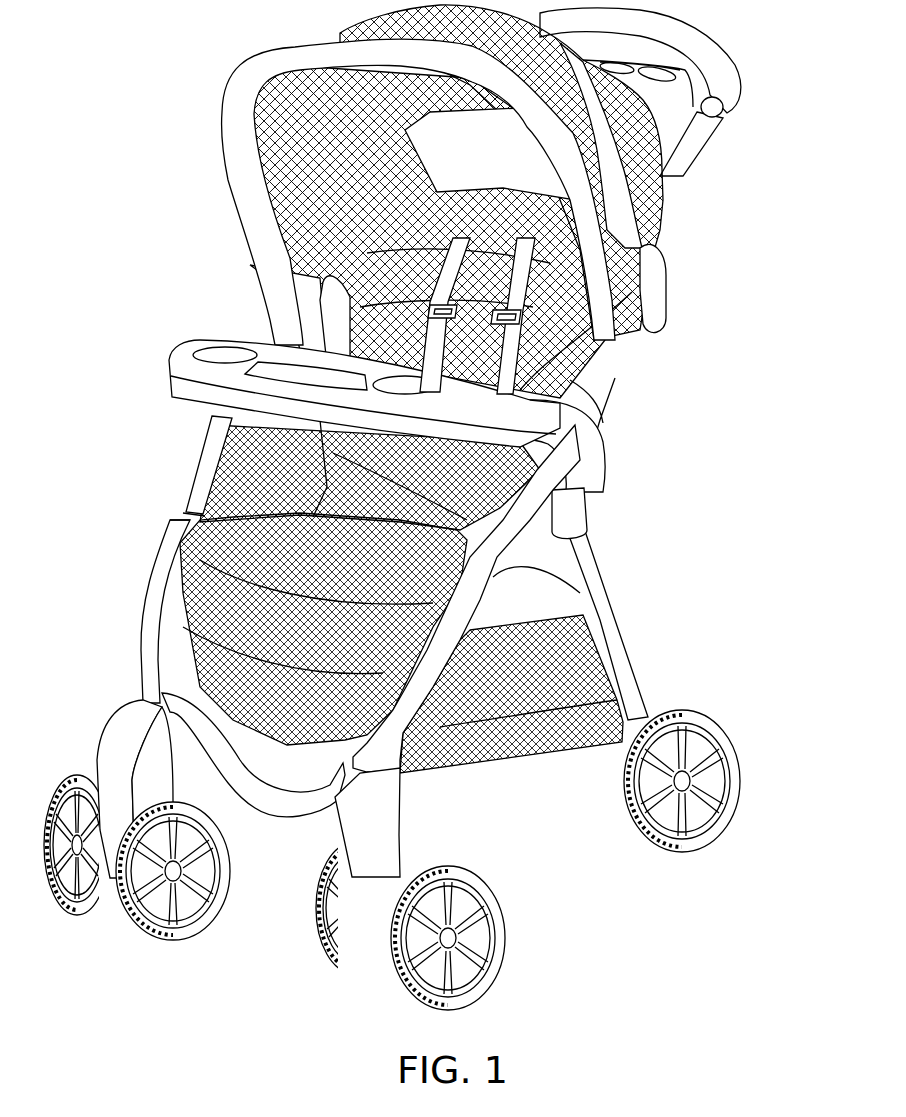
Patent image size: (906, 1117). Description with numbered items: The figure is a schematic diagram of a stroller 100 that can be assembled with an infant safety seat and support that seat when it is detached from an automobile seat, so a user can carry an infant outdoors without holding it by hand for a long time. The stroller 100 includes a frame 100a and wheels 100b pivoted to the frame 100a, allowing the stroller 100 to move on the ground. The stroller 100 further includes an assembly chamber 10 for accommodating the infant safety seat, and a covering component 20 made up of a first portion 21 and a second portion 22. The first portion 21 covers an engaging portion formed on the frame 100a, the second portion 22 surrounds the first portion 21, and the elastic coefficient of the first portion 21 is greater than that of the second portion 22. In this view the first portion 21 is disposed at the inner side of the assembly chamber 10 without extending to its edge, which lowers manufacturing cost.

The stroller 100 is at (412, 507).
The frame 100a is at (640, 507).
The wheels 100b is at (690, 688).
The assembly chamber 10 is at (545, 384).
The covering component 20 is at (376, 389).
The first portion 21 is at (268, 325).
The second portion 22 is at (188, 520).